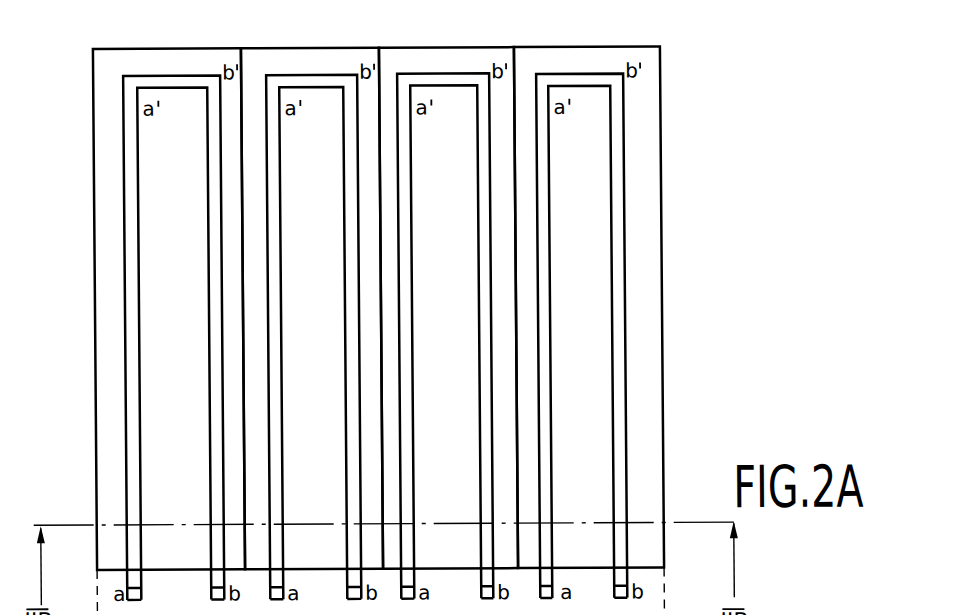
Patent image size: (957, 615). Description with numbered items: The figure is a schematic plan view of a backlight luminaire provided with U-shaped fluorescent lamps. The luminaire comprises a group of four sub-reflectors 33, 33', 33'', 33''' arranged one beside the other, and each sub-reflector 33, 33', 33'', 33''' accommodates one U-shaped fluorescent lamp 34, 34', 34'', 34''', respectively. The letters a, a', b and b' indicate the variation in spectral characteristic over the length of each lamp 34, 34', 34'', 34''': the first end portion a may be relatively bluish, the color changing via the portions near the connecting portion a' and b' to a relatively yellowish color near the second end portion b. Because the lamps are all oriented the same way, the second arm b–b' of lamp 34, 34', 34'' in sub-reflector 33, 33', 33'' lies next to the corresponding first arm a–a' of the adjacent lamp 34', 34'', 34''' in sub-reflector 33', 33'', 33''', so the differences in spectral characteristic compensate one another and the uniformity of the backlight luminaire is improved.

The sub-reflector 33 is at (140, 309).
The sub-reflector 33' is at (209, 309).
The sub-reflector 33'' is at (552, 307).
The sub-reflector 33''' is at (622, 307).
The U-shaped fluorescent lamp 34 is at (129, 337).
The U-shaped fluorescent lamp 34' is at (314, 304).
The U-shaped fluorescent lamp 34'' is at (561, 335).
The U-shaped fluorescent lamp 34''' is at (582, 303).